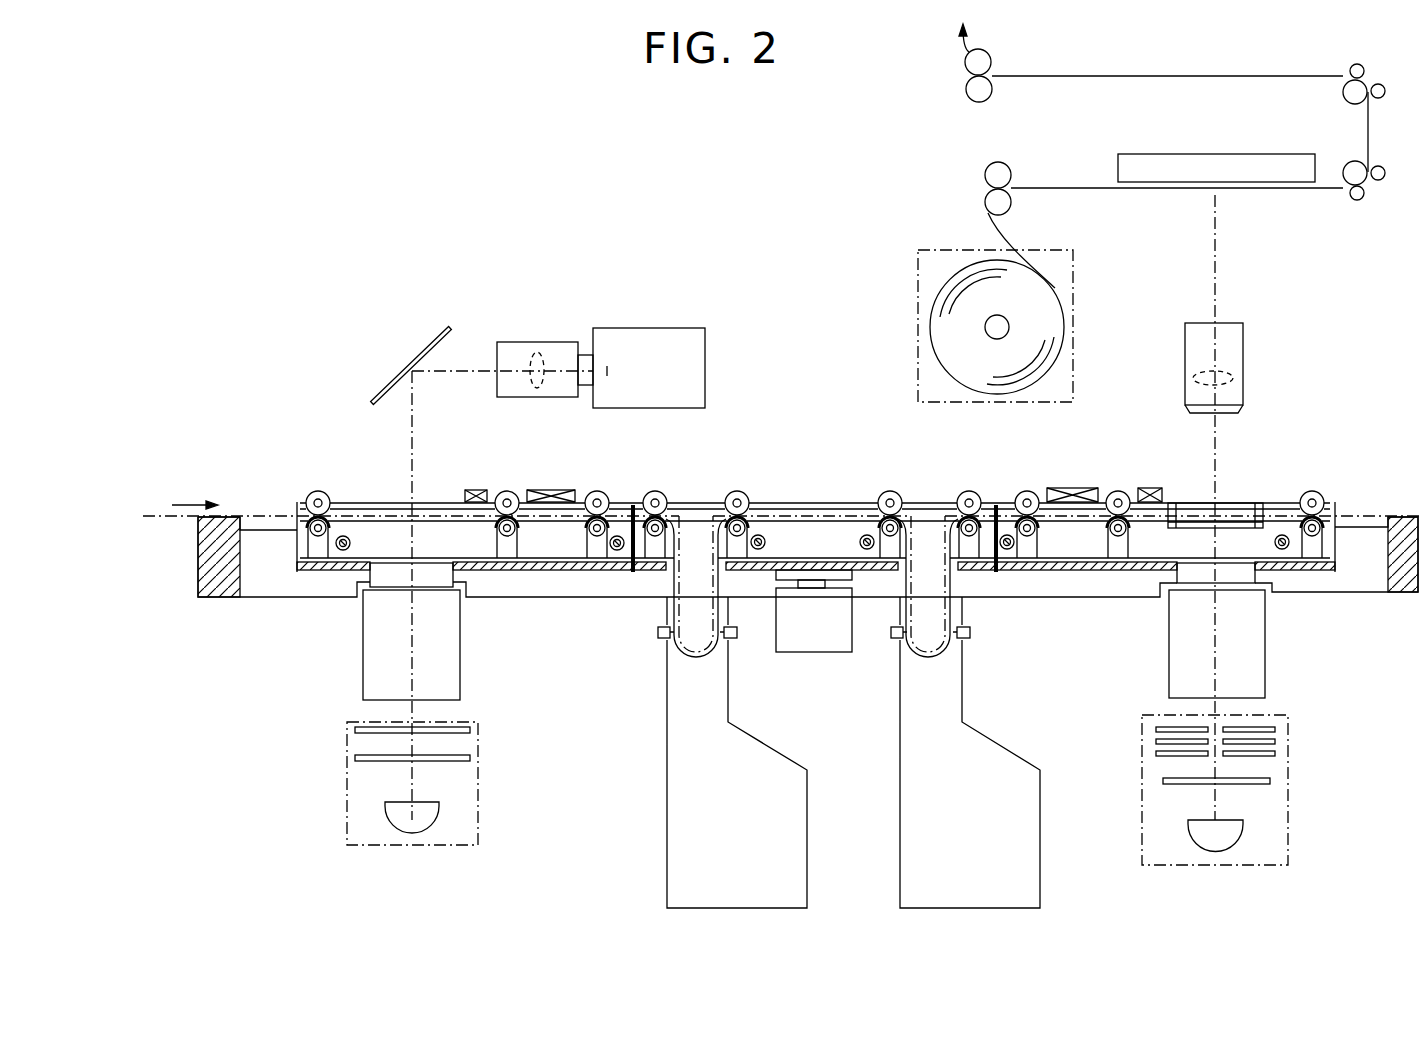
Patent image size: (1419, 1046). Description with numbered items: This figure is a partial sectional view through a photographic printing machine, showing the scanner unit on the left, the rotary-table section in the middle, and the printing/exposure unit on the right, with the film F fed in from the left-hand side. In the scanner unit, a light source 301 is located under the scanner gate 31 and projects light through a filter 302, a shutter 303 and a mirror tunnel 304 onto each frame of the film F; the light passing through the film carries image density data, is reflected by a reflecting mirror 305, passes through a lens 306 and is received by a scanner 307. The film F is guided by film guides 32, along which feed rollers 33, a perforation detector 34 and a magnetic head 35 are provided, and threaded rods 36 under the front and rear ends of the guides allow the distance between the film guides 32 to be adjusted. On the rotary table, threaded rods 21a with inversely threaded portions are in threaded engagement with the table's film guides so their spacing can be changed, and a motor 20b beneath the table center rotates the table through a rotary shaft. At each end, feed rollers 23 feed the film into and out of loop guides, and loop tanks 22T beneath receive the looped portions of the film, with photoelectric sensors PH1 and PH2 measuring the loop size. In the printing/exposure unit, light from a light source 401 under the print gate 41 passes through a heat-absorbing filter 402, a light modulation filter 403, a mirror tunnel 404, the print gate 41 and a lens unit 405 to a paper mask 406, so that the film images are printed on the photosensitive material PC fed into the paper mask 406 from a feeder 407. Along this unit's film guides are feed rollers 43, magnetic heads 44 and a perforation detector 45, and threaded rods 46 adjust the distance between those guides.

The film F is at (157, 517).
The motor 20b is at (808, 644).
The threaded rods 21a is at (865, 535).
The loop tanks 22T is at (663, 815).
The feed rollers 23 is at (678, 510).
The scanner gate 31 is at (387, 590).
The film guides 32 is at (350, 500).
The feed rollers 33 is at (312, 492).
The perforation detector 34 is at (472, 489).
The magnetic head 35 is at (550, 489).
The threaded rods 36 is at (338, 553).
The print gate 41 is at (1190, 587).
The feed rollers 43 is at (1027, 490).
The magnetic heads 44 is at (1072, 488).
The perforation detector 45 is at (1152, 488).
The threaded rods 46 is at (1007, 552).
The light source 301 is at (392, 818).
The filter 302 is at (360, 763).
The shutter 303 is at (358, 740).
The mirror tunnel 304 is at (445, 668).
The reflecting mirror 305 is at (400, 373).
The lens 306 is at (530, 350).
The scanner 307 is at (650, 337).
The light source 401 is at (1233, 833).
The heat-absorbing filter 402 is at (1270, 780).
The light modulation filter 403 is at (1277, 742).
The mirror tunnel 404 is at (1253, 658).
The lens unit 405 is at (1238, 348).
The paper mask 406 is at (1212, 163).
The feeder 407 is at (1075, 275).
The photosensitive material PC is at (1058, 187).
The photoelectric sensor PH1 is at (723, 638).
The photoelectric sensor PH2 is at (958, 638).